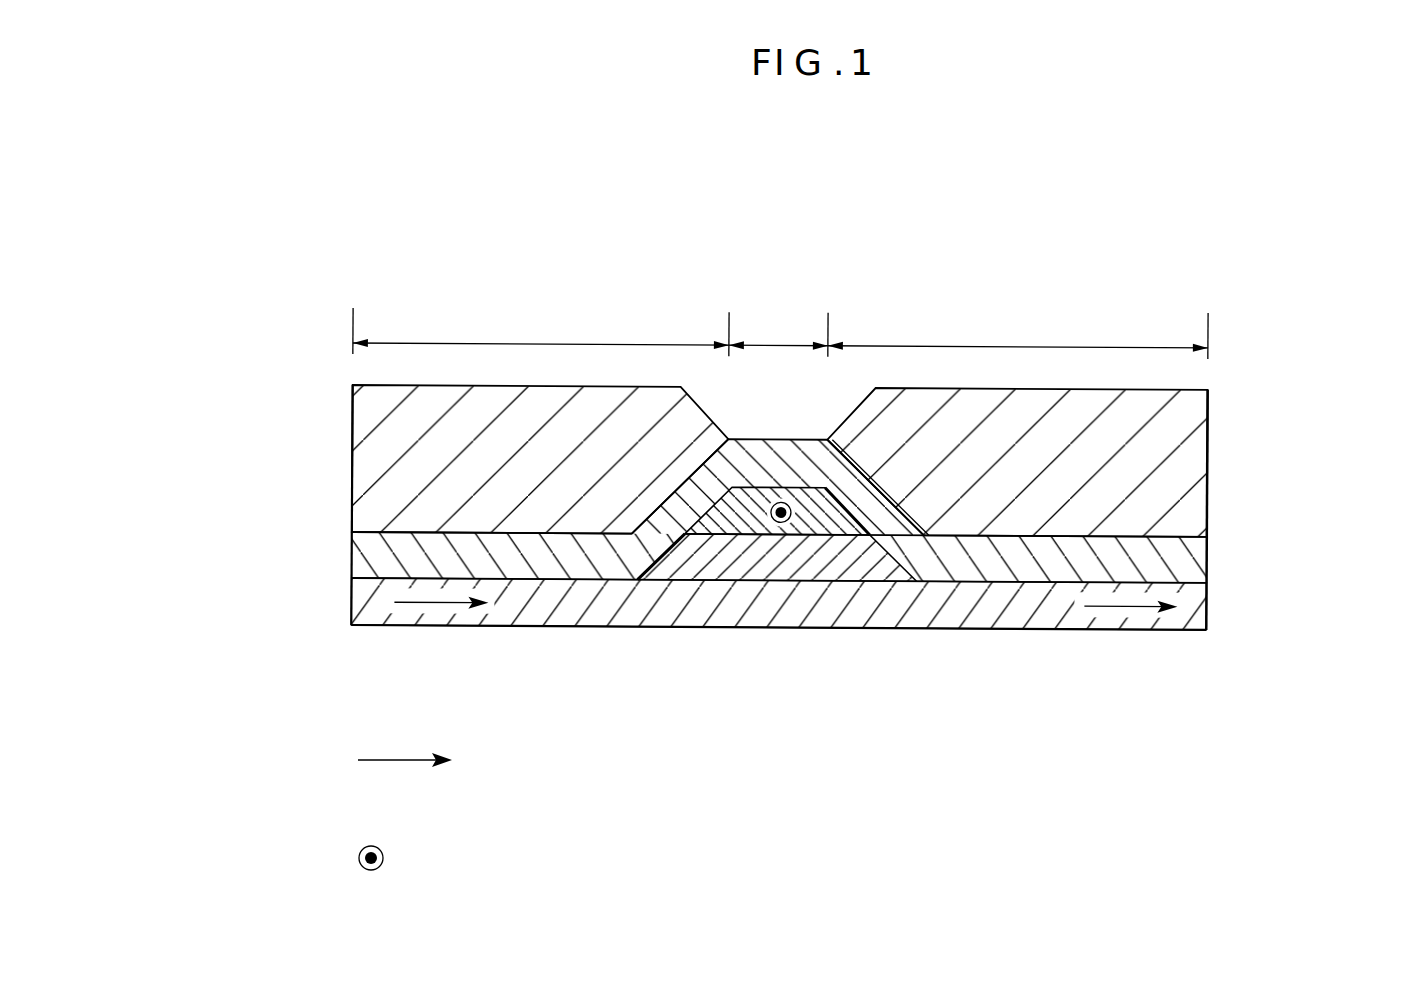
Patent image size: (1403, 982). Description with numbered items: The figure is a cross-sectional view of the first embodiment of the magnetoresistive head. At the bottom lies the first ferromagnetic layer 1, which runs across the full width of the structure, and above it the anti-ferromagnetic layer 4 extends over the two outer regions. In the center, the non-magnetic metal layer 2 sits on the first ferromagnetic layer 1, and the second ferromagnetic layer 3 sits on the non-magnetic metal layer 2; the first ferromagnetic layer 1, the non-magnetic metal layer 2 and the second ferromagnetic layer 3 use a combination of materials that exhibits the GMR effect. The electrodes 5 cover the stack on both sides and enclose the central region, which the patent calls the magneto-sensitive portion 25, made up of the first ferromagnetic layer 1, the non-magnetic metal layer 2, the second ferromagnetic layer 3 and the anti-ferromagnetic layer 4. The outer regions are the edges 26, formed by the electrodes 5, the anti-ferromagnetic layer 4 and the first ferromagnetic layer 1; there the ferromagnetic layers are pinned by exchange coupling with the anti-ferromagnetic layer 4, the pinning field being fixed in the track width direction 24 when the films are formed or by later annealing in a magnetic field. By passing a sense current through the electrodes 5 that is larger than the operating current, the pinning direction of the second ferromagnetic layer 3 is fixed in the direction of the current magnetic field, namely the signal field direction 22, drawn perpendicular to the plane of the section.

The first ferromagnetic layer 1 is at (1205, 603).
The non-magnetic metal layer 2 is at (737, 550).
The second ferromagnetic layer 3 is at (808, 522).
The anti-ferromagnetic layer 4 is at (1205, 558).
The electrodes 5 is at (362, 478).
The signal field direction 22 is at (348, 860).
The track width direction 24 is at (382, 760).
The magneto-sensitive portion 25 is at (782, 344).
The edges 26 is at (530, 343).